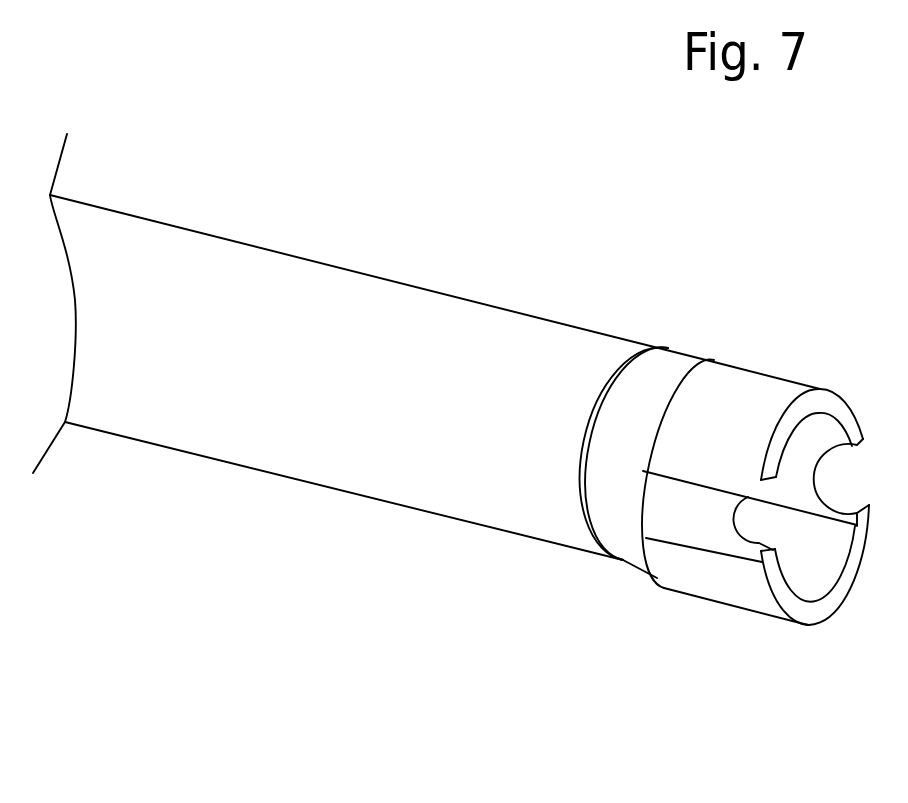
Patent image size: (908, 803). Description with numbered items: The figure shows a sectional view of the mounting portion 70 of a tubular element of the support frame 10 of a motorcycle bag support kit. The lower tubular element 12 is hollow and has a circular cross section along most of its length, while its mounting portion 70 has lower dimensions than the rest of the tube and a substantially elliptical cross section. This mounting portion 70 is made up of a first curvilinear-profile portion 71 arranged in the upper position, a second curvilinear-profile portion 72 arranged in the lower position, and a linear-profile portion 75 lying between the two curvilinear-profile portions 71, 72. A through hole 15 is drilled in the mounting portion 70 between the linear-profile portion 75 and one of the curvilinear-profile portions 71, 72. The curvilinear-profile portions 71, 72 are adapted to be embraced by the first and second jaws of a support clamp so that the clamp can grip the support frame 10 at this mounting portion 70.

The support frame 10 is at (373, 342).
The lower tubular element 12 is at (352, 312).
The through hole 15 is at (747, 527).
The mounting portion 70 is at (724, 478).
The first curvilinear-profile portion 71 is at (760, 410).
The second curvilinear-profile portion 72 is at (747, 593).
The linear-profile portion 75 is at (683, 513).